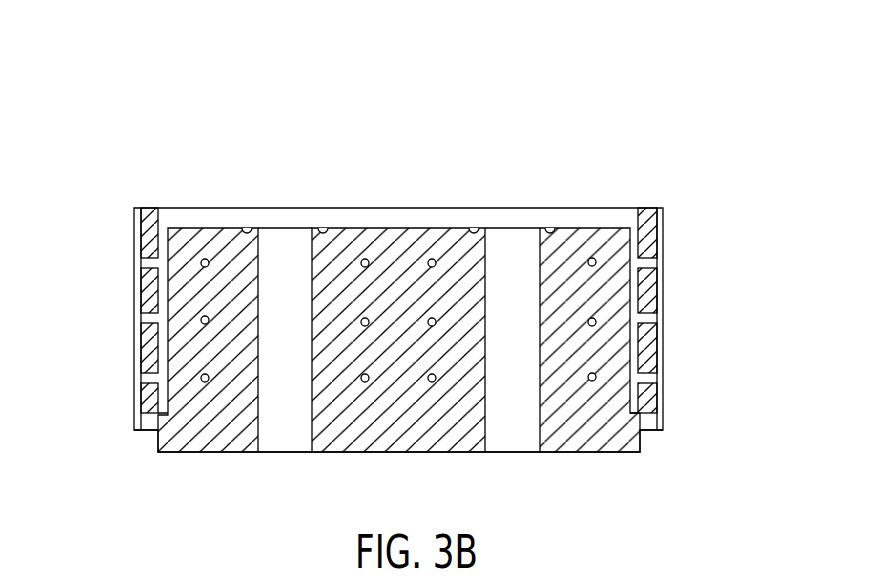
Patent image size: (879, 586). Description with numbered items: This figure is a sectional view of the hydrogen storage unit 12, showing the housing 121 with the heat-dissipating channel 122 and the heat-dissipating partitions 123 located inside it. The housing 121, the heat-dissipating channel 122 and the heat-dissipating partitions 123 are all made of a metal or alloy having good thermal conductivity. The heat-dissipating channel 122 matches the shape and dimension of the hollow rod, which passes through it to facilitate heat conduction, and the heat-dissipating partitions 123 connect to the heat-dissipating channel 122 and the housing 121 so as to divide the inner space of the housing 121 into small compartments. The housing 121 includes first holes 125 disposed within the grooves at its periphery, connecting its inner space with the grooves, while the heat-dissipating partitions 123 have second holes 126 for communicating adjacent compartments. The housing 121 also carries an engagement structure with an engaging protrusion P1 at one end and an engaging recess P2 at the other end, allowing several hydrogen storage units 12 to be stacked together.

The hydrogen storage unit 12 is at (135, 90).
The housing 121 is at (632, 226).
The heat-dissipating channel 122 is at (285, 248).
The heat-dissipating partition 123 is at (206, 230).
The first hole 125 is at (662, 318).
The second hole 126 is at (606, 369).
The engaging protrusion P1 is at (152, 200).
The engaging recess P2 is at (140, 441).